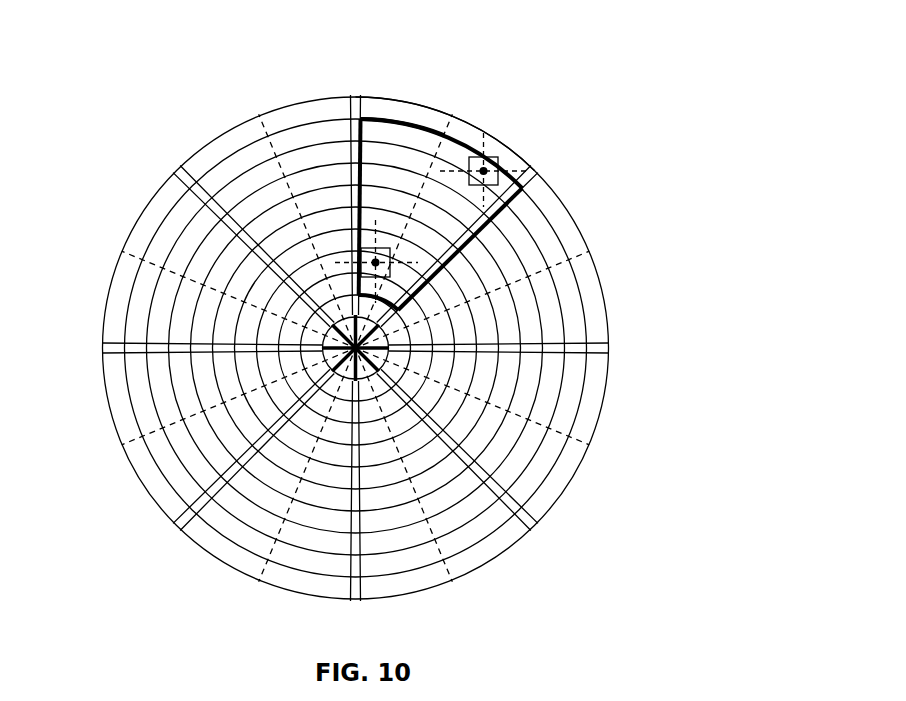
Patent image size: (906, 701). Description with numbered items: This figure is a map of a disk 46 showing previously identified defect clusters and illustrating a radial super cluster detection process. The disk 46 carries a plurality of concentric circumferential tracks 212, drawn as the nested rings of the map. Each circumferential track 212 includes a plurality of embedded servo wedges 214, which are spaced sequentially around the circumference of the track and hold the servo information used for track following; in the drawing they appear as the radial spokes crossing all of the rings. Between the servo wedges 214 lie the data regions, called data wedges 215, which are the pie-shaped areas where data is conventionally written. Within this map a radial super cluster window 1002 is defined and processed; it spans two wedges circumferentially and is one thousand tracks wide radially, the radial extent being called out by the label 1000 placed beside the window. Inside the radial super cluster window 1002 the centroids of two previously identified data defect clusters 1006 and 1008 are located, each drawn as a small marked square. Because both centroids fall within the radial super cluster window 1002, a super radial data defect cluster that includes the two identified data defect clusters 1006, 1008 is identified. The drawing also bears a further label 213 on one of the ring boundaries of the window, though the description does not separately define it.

The disk 46 is at (195, 74).
The circumferential track 212 is at (140, 253).
The track 213 is at (437, 124).
The servo wedge 214 is at (180, 170).
The data wedge 215 is at (313, 105).
The region 1000 tracks wide 1000 is at (563, 197).
The radial super cluster window 1002 is at (463, 128).
The data defect cluster 1006 is at (422, 136).
The data defect cluster 1008 is at (490, 156).